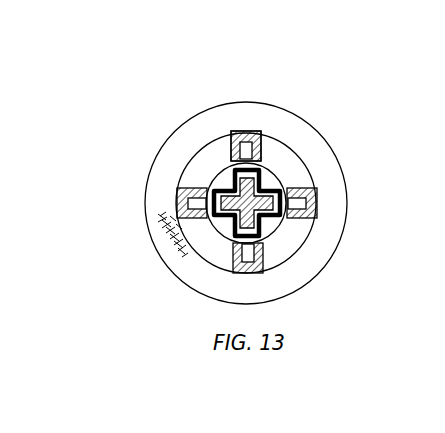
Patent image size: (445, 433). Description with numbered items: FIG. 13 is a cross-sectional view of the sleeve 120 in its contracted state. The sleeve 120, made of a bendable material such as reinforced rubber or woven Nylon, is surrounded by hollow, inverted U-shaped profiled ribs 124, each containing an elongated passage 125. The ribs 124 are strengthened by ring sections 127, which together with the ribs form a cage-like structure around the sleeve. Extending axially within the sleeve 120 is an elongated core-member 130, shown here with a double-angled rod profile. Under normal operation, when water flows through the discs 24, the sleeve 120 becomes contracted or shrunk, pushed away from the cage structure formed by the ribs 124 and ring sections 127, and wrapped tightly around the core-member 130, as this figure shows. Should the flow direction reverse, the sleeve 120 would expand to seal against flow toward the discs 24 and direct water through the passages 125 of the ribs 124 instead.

The discs 24 is at (152, 195).
The sleeve 120 is at (262, 178).
The hollow inverted U-shaped profiled ribs 124 is at (233, 131).
The elongated passage 125 is at (259, 131).
The ring sections 127 is at (203, 168).
The core-member 130 is at (276, 190).